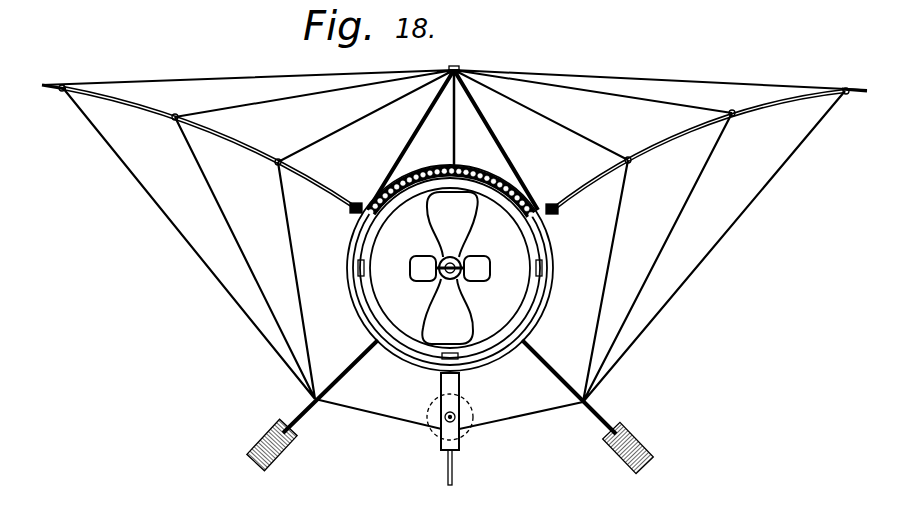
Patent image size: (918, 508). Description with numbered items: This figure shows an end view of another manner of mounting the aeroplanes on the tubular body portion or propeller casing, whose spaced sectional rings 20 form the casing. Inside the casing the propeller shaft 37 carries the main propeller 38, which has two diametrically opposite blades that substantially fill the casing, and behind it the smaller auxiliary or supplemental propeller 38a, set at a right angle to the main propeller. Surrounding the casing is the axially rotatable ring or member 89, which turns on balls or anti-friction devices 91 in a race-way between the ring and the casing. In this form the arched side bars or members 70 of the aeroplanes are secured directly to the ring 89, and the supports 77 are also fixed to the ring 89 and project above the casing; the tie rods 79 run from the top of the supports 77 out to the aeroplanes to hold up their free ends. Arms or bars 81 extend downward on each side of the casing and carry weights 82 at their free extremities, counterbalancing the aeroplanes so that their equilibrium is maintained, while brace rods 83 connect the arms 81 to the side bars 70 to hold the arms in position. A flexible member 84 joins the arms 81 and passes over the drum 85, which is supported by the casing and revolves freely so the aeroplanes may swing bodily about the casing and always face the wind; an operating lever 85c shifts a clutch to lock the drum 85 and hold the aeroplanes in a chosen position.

The spaced arms or members 70 is at (248, 137).
The tie rods 79 is at (313, 92).
The supports 77 is at (479, 102).
The balls or anti-friction devices 91 is at (458, 172).
The brace rods 83 is at (285, 210).
The axially rotatable ring or member 89 is at (555, 258).
The propeller 38 is at (430, 218).
The auxiliary or supplemental propeller 38a is at (430, 278).
The propeller shaft 37 is at (470, 257).
The rings of the tubular body portion or propeller casing 20 is at (493, 272).
The arms or bars 81 is at (605, 413).
The weights 82 is at (278, 433).
The flexible member 84 is at (545, 412).
The drum 85 is at (468, 407).
The operating lever 85c is at (452, 463).